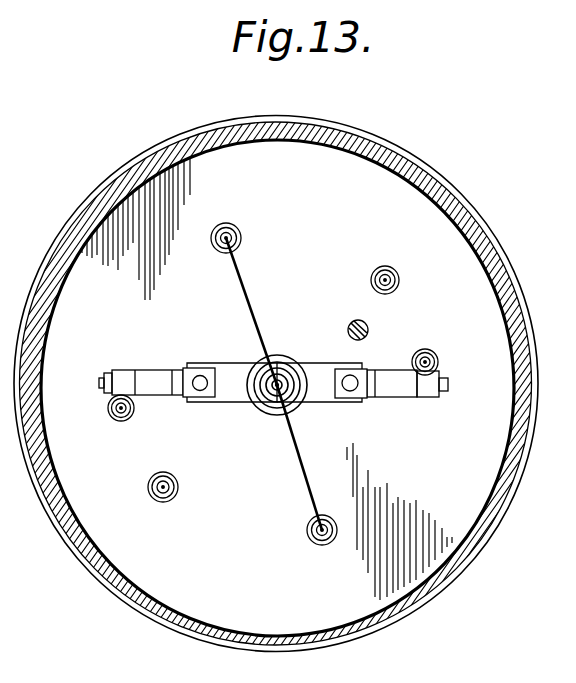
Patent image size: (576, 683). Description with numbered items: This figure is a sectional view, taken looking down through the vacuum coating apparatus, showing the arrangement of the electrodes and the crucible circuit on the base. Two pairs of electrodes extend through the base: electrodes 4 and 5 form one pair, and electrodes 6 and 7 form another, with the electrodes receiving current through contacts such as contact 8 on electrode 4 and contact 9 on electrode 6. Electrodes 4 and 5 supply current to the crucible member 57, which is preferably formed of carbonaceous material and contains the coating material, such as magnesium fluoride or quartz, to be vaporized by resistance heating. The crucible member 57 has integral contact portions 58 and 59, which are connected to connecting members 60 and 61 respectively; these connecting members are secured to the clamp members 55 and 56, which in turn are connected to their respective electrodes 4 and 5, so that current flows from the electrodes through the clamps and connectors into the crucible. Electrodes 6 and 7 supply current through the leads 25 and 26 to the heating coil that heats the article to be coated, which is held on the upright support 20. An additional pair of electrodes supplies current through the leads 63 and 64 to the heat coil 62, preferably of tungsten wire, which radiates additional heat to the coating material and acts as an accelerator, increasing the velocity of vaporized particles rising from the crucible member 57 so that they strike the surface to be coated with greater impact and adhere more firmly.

The electrode 4 is at (128, 421).
The electrode 5 is at (439, 362).
The electrode 6 is at (160, 473).
The electrode 7 is at (386, 266).
The contact 8 is at (242, 238).
The contact 9 is at (318, 545).
The upright support 20 is at (370, 330).
The lead 25 is at (198, 455).
The lead 26 is at (355, 307).
The clamp member 55 is at (156, 369).
The clamp member 56 is at (404, 371).
The crucible member 57 is at (253, 371).
The integral contact portion 58 is at (251, 402).
The integral contact portion 59 is at (329, 402).
The connecting member 60 is at (185, 400).
The connecting member 61 is at (351, 391).
The heat coil 62 is at (283, 398).
The lead 63 is at (256, 305).
The lead 64 is at (313, 500).